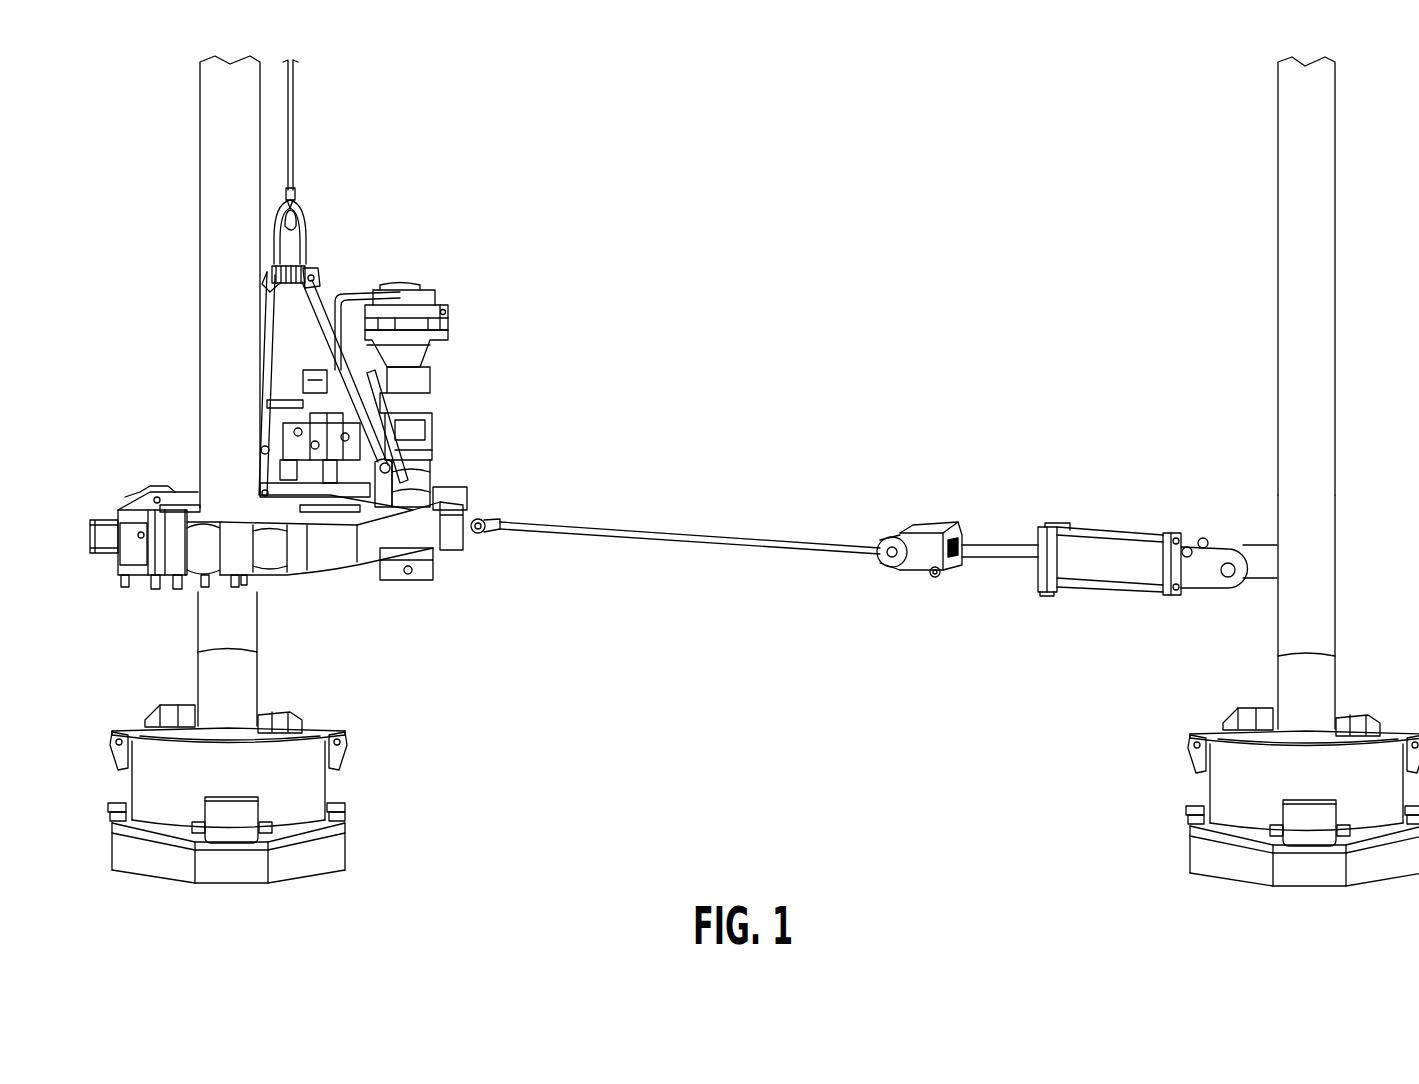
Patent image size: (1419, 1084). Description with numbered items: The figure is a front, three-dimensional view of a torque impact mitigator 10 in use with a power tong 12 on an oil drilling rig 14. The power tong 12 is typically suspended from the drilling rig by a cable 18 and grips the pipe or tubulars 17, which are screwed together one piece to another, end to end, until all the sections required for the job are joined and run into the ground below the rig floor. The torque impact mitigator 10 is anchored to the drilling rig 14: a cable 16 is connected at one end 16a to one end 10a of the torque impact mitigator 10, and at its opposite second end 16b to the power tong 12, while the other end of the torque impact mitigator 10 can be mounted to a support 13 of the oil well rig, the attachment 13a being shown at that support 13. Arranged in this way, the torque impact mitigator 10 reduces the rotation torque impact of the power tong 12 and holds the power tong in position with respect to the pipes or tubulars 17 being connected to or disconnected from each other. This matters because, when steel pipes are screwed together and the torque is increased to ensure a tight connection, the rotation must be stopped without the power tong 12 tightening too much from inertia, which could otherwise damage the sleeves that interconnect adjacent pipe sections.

The torque impact mitigator 10 is at (1002, 498).
The end of the torque impact mitigator 10a is at (908, 525).
The power tong 12 is at (487, 357).
The support 13 is at (1313, 407).
The attachment clevis on second pipe 13a is at (1262, 557).
The oil drilling rig 14 is at (115, 267).
The cable 16 is at (625, 530).
The end of the cable 16a is at (877, 557).
The second end of the cable 16b is at (472, 528).
The pipe or tubulars 17 is at (238, 102).
The cable 18 is at (292, 142).